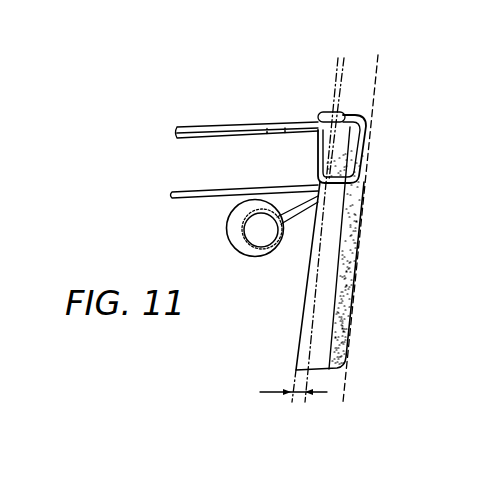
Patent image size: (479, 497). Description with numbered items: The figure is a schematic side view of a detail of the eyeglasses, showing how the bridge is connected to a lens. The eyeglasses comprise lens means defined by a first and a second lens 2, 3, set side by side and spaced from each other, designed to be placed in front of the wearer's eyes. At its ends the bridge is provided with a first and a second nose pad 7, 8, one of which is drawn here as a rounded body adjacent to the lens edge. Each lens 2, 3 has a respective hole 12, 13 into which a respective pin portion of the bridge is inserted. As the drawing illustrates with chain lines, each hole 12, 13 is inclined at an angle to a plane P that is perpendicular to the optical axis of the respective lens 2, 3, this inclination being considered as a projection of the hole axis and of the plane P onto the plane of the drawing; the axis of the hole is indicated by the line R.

The first lens 2 is at (371, 264).
The second lens 3 is at (350, 248).
The first nose pad 7 is at (197, 228).
The second nose pad 8 is at (233, 230).
The hole 12 is at (269, 153).
The hole 13 is at (316, 157).
The post axis R is at (343, 80).
The plane P is at (377, 100).